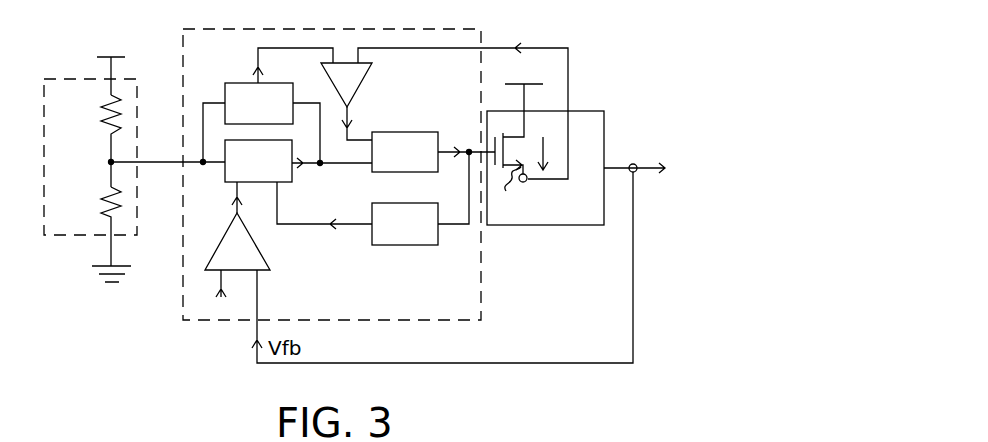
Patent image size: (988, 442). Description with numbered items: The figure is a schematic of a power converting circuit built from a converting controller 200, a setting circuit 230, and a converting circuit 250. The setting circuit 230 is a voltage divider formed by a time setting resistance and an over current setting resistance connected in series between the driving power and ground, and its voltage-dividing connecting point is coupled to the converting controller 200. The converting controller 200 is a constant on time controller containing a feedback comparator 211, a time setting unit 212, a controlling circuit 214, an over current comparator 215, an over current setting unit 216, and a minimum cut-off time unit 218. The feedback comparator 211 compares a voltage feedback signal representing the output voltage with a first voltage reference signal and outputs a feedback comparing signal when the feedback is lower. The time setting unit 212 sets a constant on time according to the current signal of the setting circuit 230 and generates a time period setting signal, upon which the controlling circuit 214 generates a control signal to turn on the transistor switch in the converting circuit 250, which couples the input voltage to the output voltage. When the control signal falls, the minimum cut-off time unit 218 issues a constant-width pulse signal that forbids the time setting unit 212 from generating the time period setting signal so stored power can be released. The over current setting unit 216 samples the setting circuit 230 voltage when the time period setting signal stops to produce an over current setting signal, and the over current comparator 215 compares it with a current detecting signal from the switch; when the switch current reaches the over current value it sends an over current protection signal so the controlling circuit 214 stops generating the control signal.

The converting controller 200 is at (186, 29).
The setting circuit 230 is at (79, 79).
The feedback comparator 211 is at (252, 246).
The time setting unit 212 is at (273, 173).
The controlling circuit 214 is at (420, 165).
The over current comparator 215 is at (361, 81).
The over current setting unit 216 is at (274, 116).
The minimum cut-off time unit 218 is at (420, 236).
The converting circuit 250 is at (604, 122).